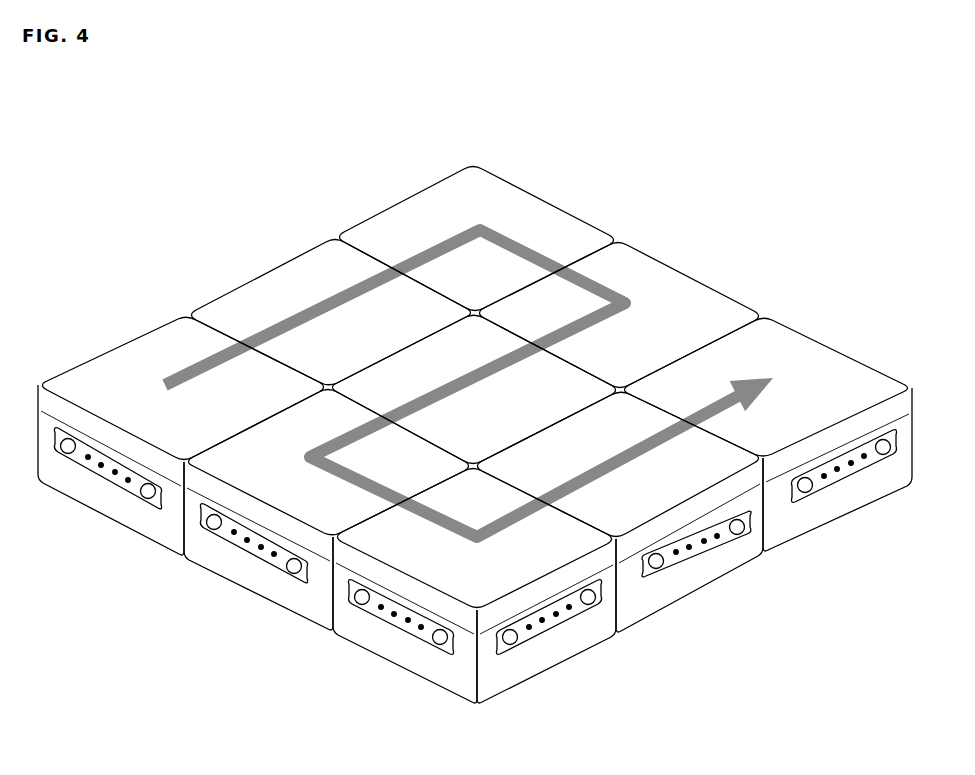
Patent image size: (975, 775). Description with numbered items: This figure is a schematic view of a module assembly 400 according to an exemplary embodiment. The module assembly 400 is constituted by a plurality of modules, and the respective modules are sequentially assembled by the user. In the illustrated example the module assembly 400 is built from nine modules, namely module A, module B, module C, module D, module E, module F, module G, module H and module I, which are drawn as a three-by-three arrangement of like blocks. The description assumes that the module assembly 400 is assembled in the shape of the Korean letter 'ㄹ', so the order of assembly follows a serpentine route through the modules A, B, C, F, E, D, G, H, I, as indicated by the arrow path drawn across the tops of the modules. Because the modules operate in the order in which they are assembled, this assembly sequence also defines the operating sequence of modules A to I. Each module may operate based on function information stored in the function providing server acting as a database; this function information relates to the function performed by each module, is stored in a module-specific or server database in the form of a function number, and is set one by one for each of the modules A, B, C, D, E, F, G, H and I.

The module assembly 400 is at (450, 114).
The module A is at (181, 436).
The module B is at (331, 312).
The module C is at (477, 239).
The module D is at (326, 510).
The module E is at (474, 389).
The module F is at (619, 315).
The module G is at (474, 586).
The module H is at (621, 512).
The module I is at (769, 434).